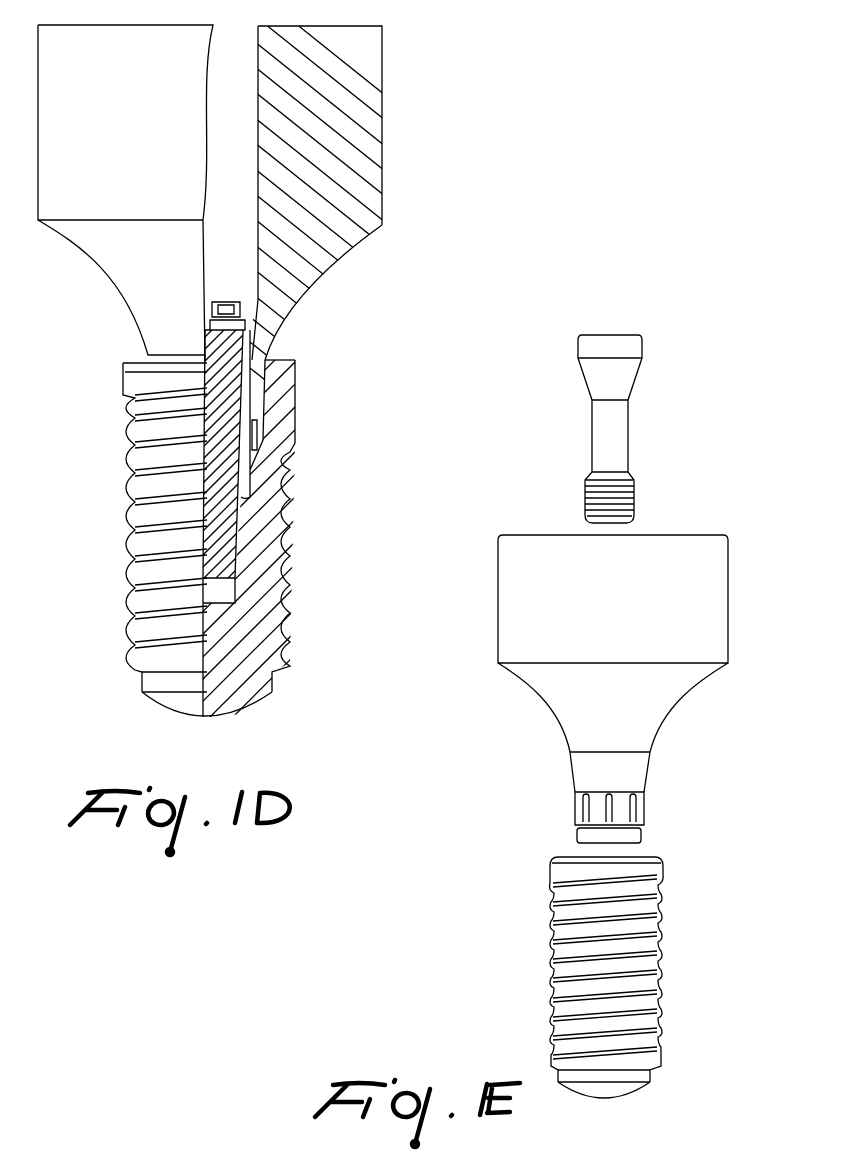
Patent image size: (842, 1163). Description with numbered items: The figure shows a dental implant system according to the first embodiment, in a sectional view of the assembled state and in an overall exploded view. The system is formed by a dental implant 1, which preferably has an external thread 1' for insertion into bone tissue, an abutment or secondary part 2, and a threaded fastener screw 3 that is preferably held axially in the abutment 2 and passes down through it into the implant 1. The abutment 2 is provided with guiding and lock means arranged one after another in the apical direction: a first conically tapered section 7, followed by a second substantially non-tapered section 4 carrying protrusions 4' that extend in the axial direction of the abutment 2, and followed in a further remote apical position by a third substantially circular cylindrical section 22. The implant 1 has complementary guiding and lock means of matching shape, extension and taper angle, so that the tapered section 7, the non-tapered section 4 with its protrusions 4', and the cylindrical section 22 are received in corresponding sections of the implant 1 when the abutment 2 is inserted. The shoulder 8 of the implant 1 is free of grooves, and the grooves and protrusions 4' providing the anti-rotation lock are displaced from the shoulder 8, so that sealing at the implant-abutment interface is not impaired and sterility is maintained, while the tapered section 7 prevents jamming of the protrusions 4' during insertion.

In FIG. 1D, the dental implant 1 is at (331, 537).
In FIG. 1E, the dental implant 1 is at (640, 975).
In FIG. 1D, the thread of implant 1' is at (243, 527).
In FIG. 1E, the thread of implant 1' is at (649, 974).
In FIG. 1D, the abutment 2 is at (363, 140).
In FIG. 1E, the abutment 2 is at (712, 583).
In FIG. 1D, the threaded fastener screw 3 is at (205, 548).
In FIG. 1E, the threaded fastener screw 3 is at (623, 433).
In FIG. 1D, the second substantially non-tapered section 4 is at (305, 438).
In FIG. 1E, the second substantially non-tapered section 4 is at (552, 829).
In FIG. 1E, the protrusions 4' is at (659, 797).
In FIG. 1D, the first conically tapered section 7 is at (288, 385).
In FIG. 1E, the first conically tapered section 7 is at (627, 768).
In FIG. 1D, the shoulder 8 is at (283, 355).
In FIG. 1E, the third substantially circular cylindrical section 22 is at (582, 837).